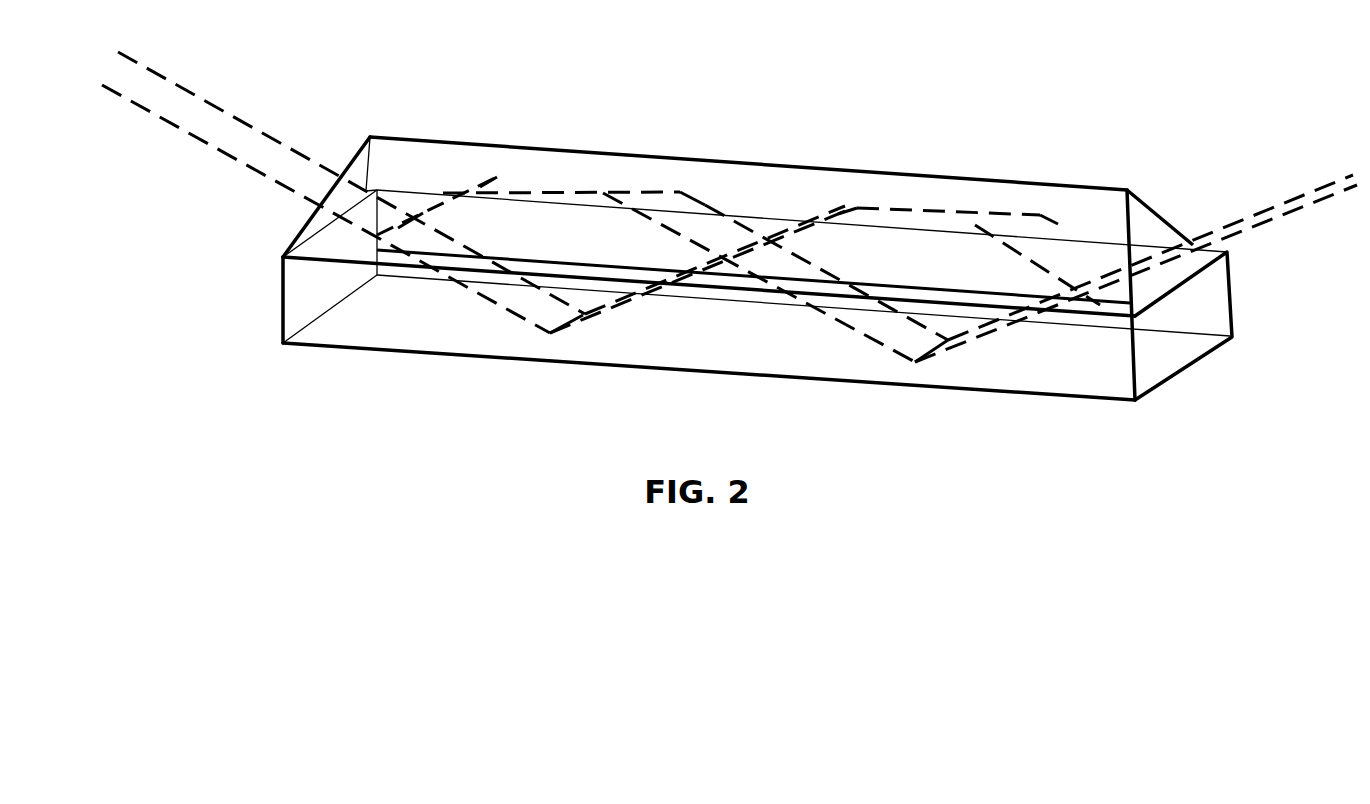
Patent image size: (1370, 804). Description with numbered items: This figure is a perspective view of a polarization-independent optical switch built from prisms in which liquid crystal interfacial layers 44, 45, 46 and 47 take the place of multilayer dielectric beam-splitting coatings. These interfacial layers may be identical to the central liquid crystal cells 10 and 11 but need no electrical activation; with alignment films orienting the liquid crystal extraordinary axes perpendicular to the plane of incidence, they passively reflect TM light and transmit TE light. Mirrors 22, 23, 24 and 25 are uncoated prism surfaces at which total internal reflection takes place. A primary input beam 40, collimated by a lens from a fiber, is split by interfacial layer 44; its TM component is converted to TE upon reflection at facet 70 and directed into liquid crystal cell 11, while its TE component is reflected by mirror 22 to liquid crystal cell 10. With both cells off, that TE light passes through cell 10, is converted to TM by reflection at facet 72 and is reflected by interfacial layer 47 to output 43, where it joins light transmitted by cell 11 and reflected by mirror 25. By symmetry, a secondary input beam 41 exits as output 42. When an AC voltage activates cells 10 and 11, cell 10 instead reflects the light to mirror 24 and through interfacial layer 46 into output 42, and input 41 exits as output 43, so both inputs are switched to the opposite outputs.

The liquid crystal cell 10 is at (772, 240).
The liquid crystal cell 11 is at (740, 275).
The mirror 22 is at (547, 334).
The mirror 23 is at (563, 337).
The mirror 24 is at (915, 362).
The mirror 25 is at (948, 340).
The primary input beam 40 is at (200, 99).
The secondary input beam 41 is at (177, 130).
The output 42 is at (1305, 193).
The output 43 is at (1286, 213).
The liquid crystal interfacial layer 44 is at (410, 215).
The liquid crystal interfacial layer 45 is at (372, 246).
The liquid crystal interfacial layer 46 is at (1170, 238).
The liquid crystal interfacial layer 47 is at (1102, 300).
The facet 70 is at (500, 176).
The facet 72 is at (857, 208).